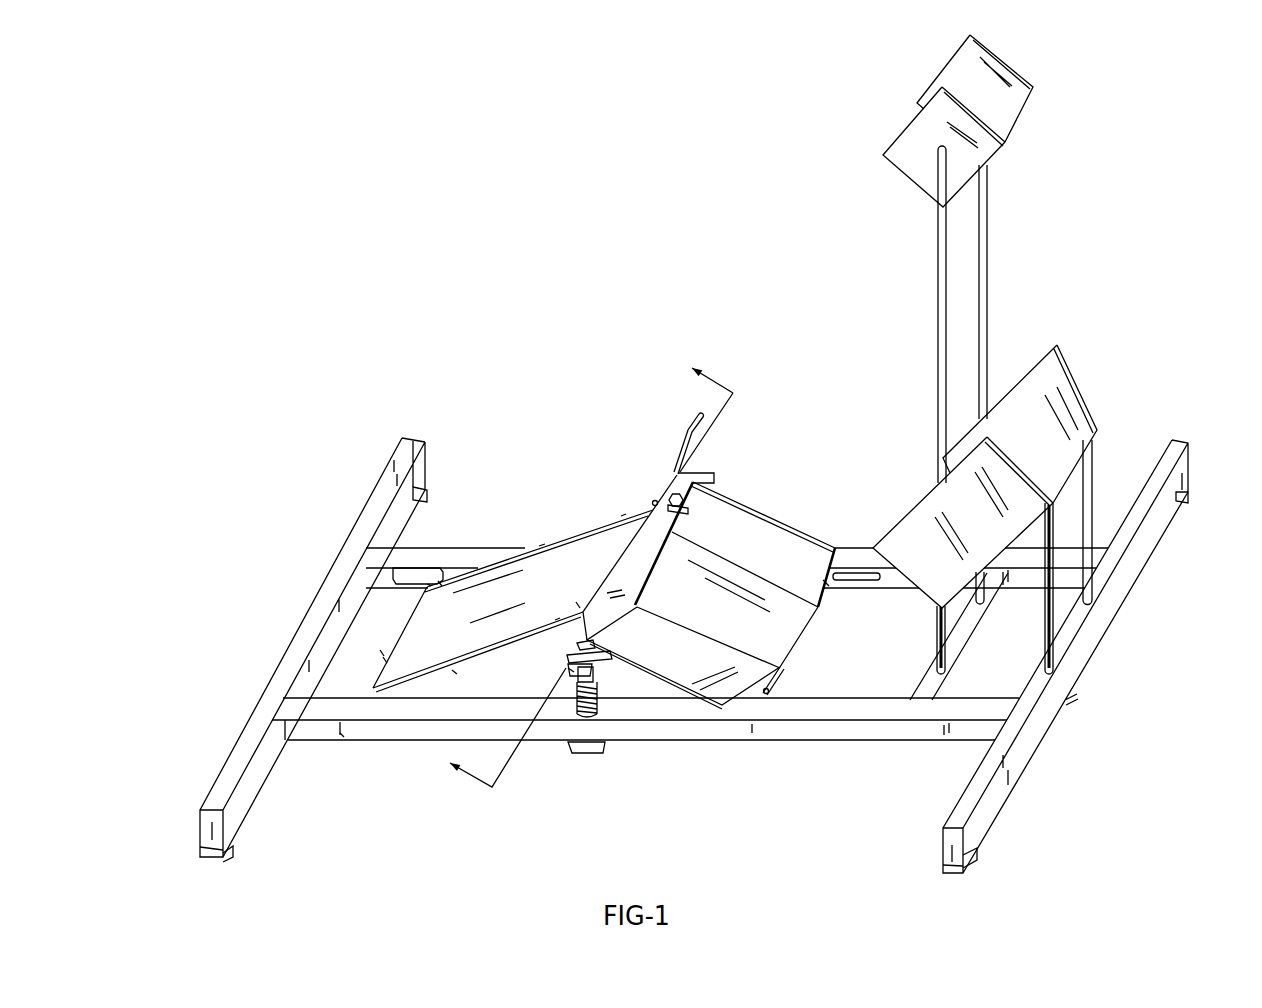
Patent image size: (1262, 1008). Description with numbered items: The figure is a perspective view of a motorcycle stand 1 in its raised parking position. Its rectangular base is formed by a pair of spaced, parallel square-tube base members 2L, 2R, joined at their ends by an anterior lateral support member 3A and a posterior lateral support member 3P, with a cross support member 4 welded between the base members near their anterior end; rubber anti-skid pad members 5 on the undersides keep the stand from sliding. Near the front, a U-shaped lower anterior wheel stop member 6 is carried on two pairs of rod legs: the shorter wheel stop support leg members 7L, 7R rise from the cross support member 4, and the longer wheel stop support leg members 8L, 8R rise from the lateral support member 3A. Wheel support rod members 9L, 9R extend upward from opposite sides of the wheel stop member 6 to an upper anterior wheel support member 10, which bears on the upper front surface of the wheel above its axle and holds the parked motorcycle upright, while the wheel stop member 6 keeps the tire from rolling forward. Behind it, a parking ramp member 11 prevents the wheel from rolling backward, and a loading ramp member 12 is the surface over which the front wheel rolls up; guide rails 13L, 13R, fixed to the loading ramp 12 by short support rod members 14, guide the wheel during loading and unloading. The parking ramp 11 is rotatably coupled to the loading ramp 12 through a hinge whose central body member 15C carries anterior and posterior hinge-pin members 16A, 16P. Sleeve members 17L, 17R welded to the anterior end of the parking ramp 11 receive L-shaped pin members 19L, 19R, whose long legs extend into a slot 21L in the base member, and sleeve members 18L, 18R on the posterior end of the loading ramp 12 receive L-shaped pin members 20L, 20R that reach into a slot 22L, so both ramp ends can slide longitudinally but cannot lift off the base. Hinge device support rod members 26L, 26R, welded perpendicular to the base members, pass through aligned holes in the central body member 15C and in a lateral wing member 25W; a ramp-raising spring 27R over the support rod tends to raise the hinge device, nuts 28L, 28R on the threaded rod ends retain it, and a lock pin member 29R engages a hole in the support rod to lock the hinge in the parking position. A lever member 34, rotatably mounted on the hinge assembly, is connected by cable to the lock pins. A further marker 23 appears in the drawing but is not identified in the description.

The motorcycle stand 1 is at (837, 762).
The base member 2L is at (865, 548).
The base member 2R is at (922, 742).
The posterior lateral support member 3P is at (213, 785).
The anterior lateral support member 3A is at (1050, 727).
The cross support member 4 is at (953, 668).
The anti-skid pad members 5 is at (582, 752).
The lower anterior wheel stop member 6 is at (1077, 377).
The wheel stop support leg member 7L is at (985, 578).
The wheel stop support leg member 7R is at (946, 625).
The wheel stop support leg member 8L is at (1093, 493).
The wheel stop support leg member 8R is at (1055, 618).
The wheel support rod member 9L is at (988, 270).
The wheel support rod member 9R is at (938, 272).
The upper anterior wheel support member 10 is at (887, 147).
The parking ramp member 11 is at (808, 530).
The loading ramp member 12 is at (650, 513).
The guide rail 13L is at (490, 563).
The guide rail 13R is at (445, 650).
The support rod members 14 is at (455, 672).
The hinge device central body member 15C is at (713, 475).
The posterior hinge-pin member 16P is at (655, 500).
The anterior hinge-pin member 16A is at (680, 532).
The sleeve member 17L is at (826, 583).
The sleeve member 17R is at (773, 686).
The sleeve member 18L is at (440, 583).
The sleeve member 18R is at (578, 605).
The L-shaped pin member 19L is at (819, 610).
The L-shaped pin member 19R is at (788, 660).
The L-shaped pin member 20L is at (382, 653).
The L-shaped pin member 20R is at (385, 660).
The slot 21L is at (873, 580).
The slot 22L is at (393, 570).
The pivot axis 23 is at (578, 569).
The lateral wing member 25W is at (592, 670).
The hinge device support rod member 26L is at (688, 510).
The hinge device support rod member 26R is at (612, 655).
The ramp-raising spring 27R is at (597, 703).
The nut 28L is at (688, 497).
The nut 28R is at (595, 643).
The lock pin member 29R is at (573, 670).
The lever member 34 is at (695, 418).